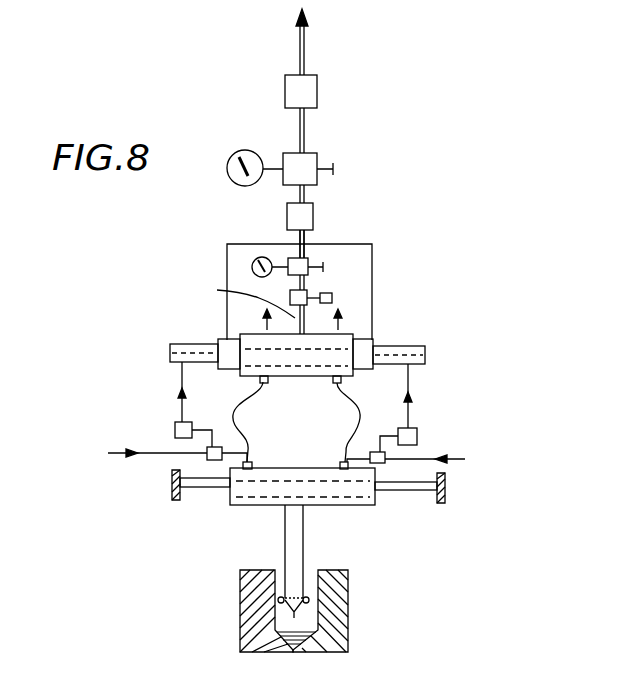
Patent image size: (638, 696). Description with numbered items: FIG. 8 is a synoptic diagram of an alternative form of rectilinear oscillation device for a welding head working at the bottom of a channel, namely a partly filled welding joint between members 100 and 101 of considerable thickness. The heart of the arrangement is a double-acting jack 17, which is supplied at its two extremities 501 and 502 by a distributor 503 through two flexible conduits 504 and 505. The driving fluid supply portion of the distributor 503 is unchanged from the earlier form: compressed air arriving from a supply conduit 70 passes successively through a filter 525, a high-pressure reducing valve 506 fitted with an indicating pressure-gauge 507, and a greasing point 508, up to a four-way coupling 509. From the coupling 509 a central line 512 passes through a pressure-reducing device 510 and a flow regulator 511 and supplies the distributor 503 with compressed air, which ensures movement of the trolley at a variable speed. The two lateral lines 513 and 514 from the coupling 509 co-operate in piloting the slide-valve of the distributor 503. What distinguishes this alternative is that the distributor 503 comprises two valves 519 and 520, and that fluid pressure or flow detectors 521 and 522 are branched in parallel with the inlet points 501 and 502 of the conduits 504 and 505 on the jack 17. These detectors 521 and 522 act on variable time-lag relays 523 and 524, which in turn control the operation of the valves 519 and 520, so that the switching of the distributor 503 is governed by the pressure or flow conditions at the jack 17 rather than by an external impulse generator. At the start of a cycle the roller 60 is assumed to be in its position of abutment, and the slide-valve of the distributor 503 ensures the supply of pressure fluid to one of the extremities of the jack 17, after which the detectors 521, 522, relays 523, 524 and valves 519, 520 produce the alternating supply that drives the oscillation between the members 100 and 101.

The supply conduit 70 is at (305, 48).
The filter 525 is at (317, 92).
The high-pressure reducing valve 506 is at (318, 162).
The indicating pressure-gauge 507 is at (261, 153).
The greasing point 508 is at (313, 212).
The four-way coupling 509 is at (311, 239).
The pressure-reducing device 510 is at (309, 260).
The flow regulator 511 is at (318, 294).
The central line 512 is at (232, 300).
The lateral line 513 is at (227, 268).
The lateral line 514 is at (372, 290).
The valve 519 is at (170, 360).
The valve 520 is at (425, 365).
The distributor 503 is at (303, 382).
The flexible conduit 504 is at (247, 400).
The flexible conduit 505 is at (350, 403).
The variable time-lag relay 523 is at (175, 427).
The variable time-lag relay 524 is at (417, 437).
The fluid pressure or flow detector 521 is at (207, 458).
The fluid pressure or flow detector 522 is at (379, 464).
The extremity of the jack 501 is at (251, 463).
The extremity of the jack 502 is at (340, 464).
The double-acting jack 17 is at (344, 512).
The roller 60 is at (278, 605).
The member 100 is at (247, 597).
The member 101 is at (337, 597).